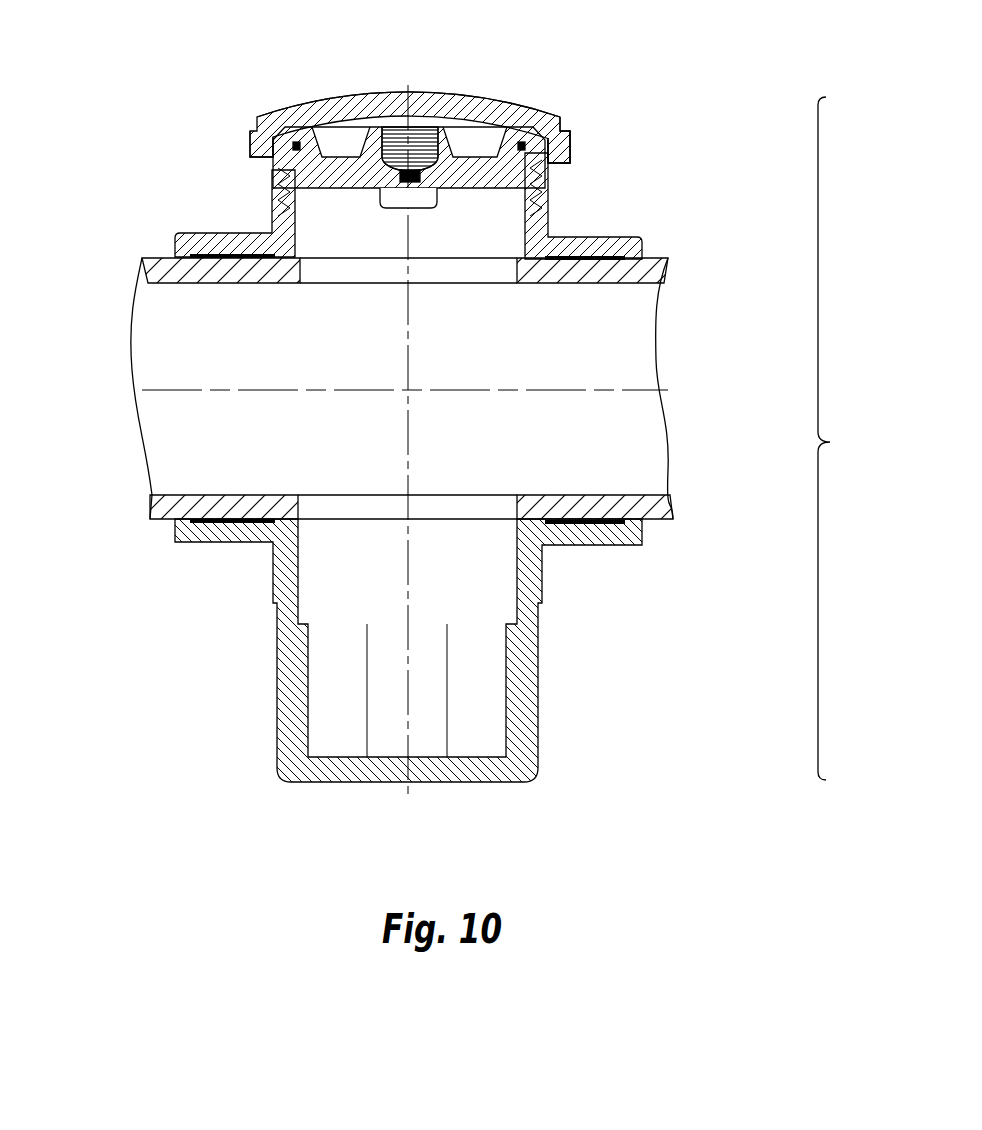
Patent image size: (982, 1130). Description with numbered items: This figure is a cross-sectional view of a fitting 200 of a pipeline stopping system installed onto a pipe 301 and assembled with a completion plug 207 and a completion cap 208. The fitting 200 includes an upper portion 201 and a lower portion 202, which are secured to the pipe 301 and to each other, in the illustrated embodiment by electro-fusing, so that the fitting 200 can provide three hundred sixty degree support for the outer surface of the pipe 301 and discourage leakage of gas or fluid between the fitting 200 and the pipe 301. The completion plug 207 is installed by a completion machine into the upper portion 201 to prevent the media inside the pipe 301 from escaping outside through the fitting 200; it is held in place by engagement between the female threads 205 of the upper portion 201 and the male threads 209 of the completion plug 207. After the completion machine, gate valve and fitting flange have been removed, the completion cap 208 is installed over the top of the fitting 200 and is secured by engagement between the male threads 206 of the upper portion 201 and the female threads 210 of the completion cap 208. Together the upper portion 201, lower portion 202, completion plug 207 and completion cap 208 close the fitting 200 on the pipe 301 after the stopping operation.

The fitting 200 is at (849, 438).
The upper portion 201 is at (625, 240).
The lower portion 202 is at (613, 542).
The female threads 205 is at (260, 120).
The male threads 206 is at (553, 140).
The completion plug 207 is at (505, 180).
The completion cap 208 is at (333, 113).
The male threads 209 is at (253, 153).
The female threads 210 is at (565, 148).
The pipe 301 is at (180, 275).